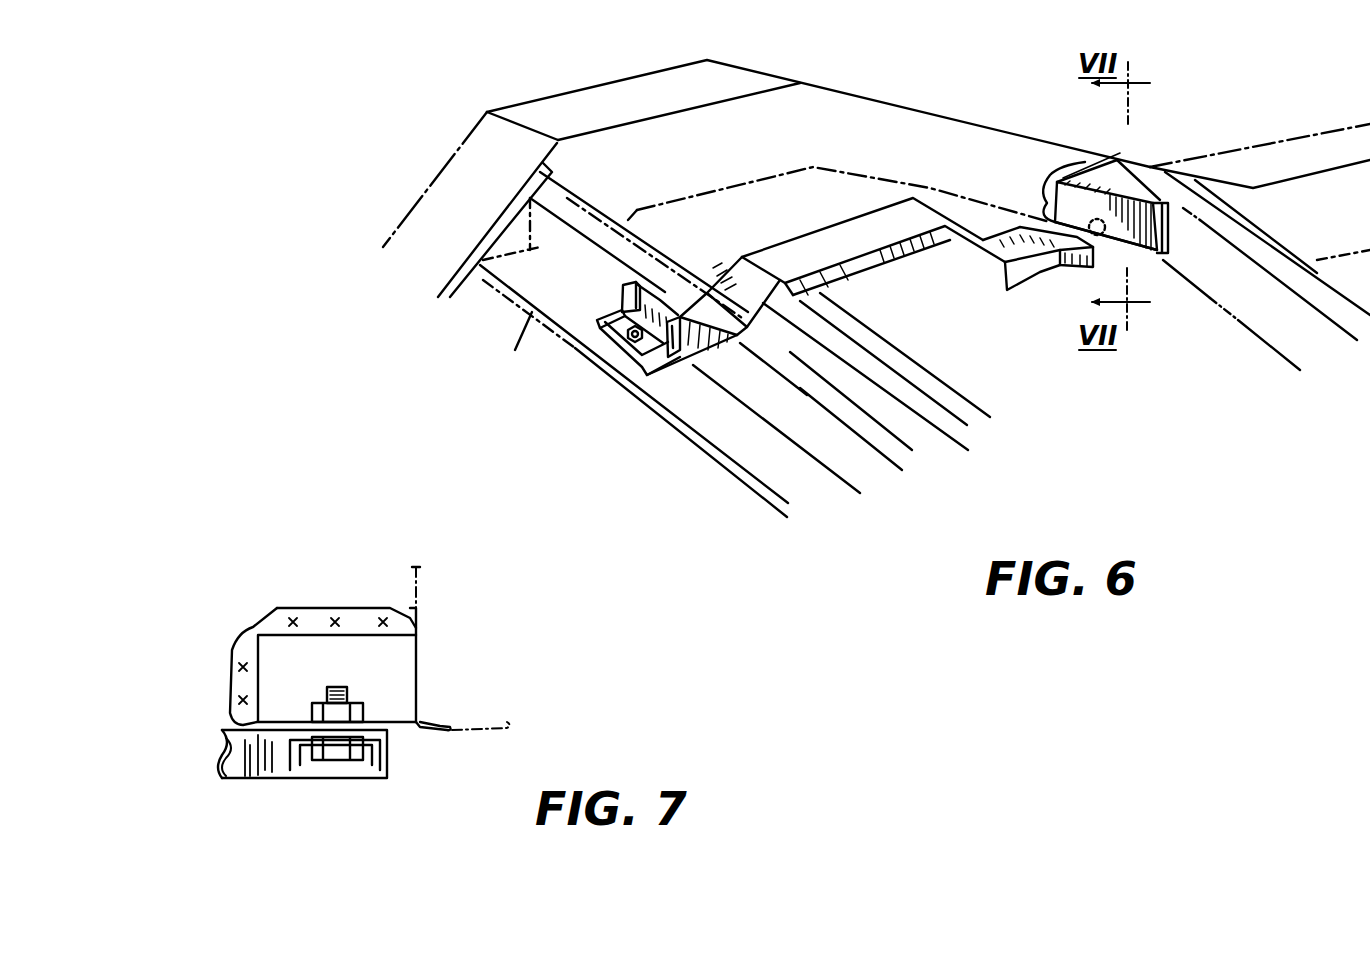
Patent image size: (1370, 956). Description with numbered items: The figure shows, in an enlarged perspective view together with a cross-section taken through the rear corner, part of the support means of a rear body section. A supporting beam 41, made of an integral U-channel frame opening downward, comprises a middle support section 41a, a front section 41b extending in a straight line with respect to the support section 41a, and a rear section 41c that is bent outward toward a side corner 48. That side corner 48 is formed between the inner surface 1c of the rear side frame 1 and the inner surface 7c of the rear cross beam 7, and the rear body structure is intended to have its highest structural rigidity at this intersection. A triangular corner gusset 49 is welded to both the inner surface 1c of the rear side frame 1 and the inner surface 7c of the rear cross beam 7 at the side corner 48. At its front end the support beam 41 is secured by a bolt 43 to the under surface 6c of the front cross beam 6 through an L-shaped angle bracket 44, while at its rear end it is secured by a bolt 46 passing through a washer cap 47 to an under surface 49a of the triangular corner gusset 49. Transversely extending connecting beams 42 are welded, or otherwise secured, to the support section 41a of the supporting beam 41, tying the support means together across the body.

In FIG. 6, the rear side frame 1 is at (878, 88).
In FIG. 6, the inner surface of rear side frame 1c is at (943, 137).
In FIG. 7, the inner surface of rear side frame 1c is at (420, 590).
In FIG. 6, the front cross beam 6 is at (640, 400).
In FIG. 6, the under surface of front cross beam 6c is at (527, 287).
In FIG. 6, the rear cross beam 7 is at (1253, 332).
In FIG. 6, the inner surface of rear cross beam 7c is at (1220, 270).
In FIG. 6, the supporting beam 41 is at (847, 328).
In FIG. 6, the middle support section 41a is at (850, 268).
In FIG. 6, the front section 41b is at (670, 363).
In FIG. 6, the rear section 41c is at (1020, 257).
In FIG. 7, the rear section 41c is at (257, 787).
In FIG. 6, the connecting beam 42 is at (935, 388).
In FIG. 6, the bolt 43 is at (597, 343).
In FIG. 6, the L-shaped angle bracket 44 is at (638, 296).
In FIG. 7, the bolt 46 is at (337, 753).
In FIG. 7, the washer cap 47 is at (387, 757).
In FIG. 6, the side corner 48 is at (1125, 147).
In FIG. 6, the triangular corner gusset 49 is at (1160, 258).
In FIG. 7, the triangular corner gusset 49 is at (253, 614).
In FIG. 7, the under surface of triangular corner gusset 49a is at (222, 755).